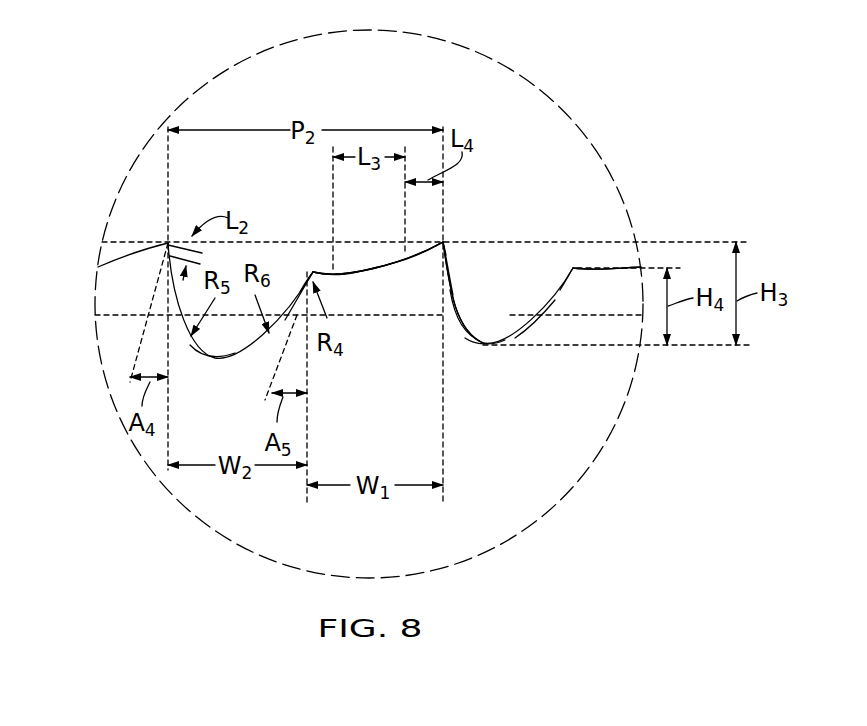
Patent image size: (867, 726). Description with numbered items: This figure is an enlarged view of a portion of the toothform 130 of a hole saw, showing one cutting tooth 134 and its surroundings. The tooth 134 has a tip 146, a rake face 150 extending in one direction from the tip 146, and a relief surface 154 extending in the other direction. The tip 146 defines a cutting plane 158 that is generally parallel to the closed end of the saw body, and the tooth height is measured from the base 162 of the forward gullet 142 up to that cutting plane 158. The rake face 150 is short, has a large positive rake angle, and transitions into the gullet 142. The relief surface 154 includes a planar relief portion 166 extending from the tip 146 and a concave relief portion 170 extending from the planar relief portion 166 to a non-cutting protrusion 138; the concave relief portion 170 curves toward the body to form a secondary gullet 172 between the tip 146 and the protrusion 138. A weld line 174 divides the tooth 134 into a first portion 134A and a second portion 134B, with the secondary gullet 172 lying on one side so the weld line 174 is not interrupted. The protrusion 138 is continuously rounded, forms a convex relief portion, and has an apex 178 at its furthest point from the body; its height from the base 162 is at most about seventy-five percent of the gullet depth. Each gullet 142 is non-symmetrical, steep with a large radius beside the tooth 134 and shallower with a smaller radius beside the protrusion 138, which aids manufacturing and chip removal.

The toothform 130 is at (100, 158).
The tooth 134 is at (445, 277).
The first portion 134A is at (358, 302).
The second portion 134B is at (426, 354).
The protrusion 138 is at (577, 278).
The gullet 142 is at (204, 352).
The tip 146 is at (443, 242).
The rake face 150 is at (443, 244).
The relief surface 154 is at (143, 253).
The cutting plane 158 is at (647, 240).
The base 162 is at (478, 343).
The planar relief portion 166 is at (416, 255).
The concave relief portion 170 is at (370, 272).
The secondary gullet 172 is at (338, 272).
The weld line 174 is at (447, 303).
The apex 178 is at (313, 272).